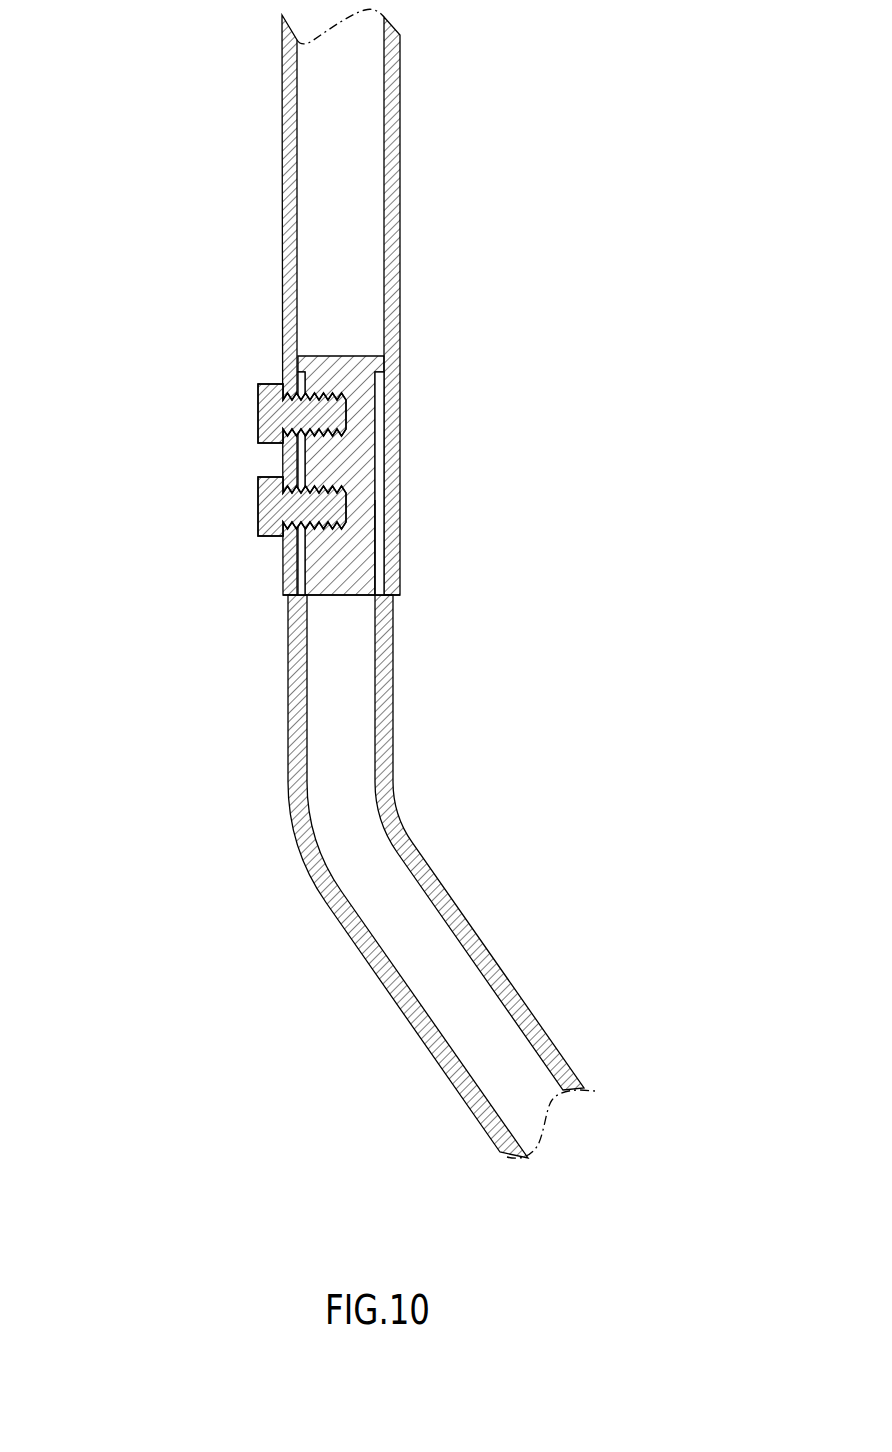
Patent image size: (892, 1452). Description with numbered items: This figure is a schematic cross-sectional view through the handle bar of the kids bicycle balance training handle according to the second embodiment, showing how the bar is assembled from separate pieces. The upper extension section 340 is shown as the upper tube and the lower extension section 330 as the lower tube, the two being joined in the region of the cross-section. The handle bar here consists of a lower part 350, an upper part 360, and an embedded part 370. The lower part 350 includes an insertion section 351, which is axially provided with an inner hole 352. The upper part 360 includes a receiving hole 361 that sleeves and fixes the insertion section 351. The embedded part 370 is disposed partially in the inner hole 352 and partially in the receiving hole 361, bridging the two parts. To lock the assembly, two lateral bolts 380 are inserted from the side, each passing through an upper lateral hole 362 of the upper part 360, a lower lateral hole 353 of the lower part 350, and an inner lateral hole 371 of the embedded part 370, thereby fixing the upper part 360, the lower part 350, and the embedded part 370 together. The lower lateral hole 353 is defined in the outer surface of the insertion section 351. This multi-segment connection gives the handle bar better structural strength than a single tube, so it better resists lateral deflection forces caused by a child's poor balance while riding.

The upper extension section 340 is at (398, 104).
The upper part 360 is at (435, 169).
The receiving hole 361 is at (385, 308).
The insertion section 351 is at (387, 400).
The inner hole 352 is at (380, 538).
The embedded part 370 is at (350, 565).
The inner lateral hole 371 is at (334, 498).
The lateral bolt 380 is at (260, 438).
The lower lateral hole 353 is at (297, 404).
The upper lateral hole 362 is at (298, 395).
The lower extension section 330 is at (490, 968).
The lower part 350 is at (340, 1003).